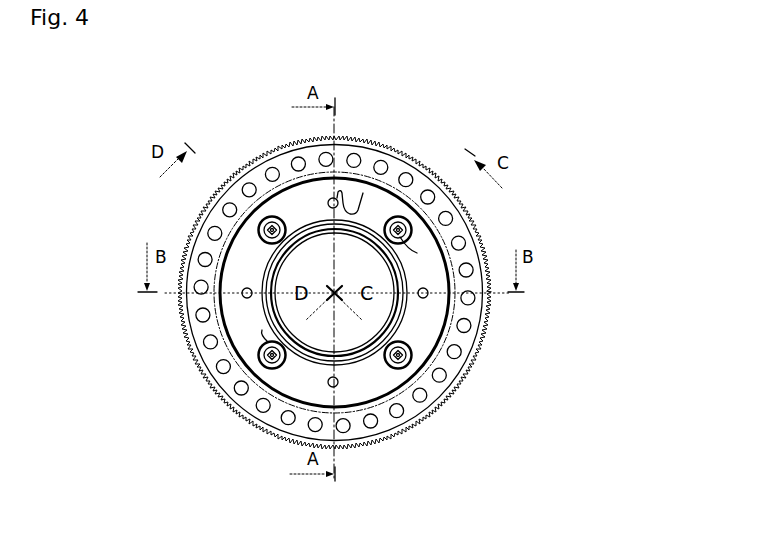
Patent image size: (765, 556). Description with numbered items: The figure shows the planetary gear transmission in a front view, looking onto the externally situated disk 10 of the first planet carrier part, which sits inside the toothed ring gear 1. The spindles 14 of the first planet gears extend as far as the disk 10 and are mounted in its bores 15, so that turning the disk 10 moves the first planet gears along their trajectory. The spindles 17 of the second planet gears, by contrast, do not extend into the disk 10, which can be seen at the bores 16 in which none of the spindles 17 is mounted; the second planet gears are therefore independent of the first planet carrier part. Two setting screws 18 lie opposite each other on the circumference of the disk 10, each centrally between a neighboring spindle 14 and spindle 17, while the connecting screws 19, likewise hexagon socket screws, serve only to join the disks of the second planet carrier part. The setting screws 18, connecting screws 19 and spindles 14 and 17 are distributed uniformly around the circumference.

The ring gear 1 is at (288, 147).
The disk 10 is at (385, 208).
The spindle 14 is at (241, 294).
The bore 15 is at (248, 300).
The bore 16 is at (363, 193).
The spindle 17 is at (368, 195).
The setting screw 18 is at (260, 227).
The connecting screw 19 is at (270, 347).